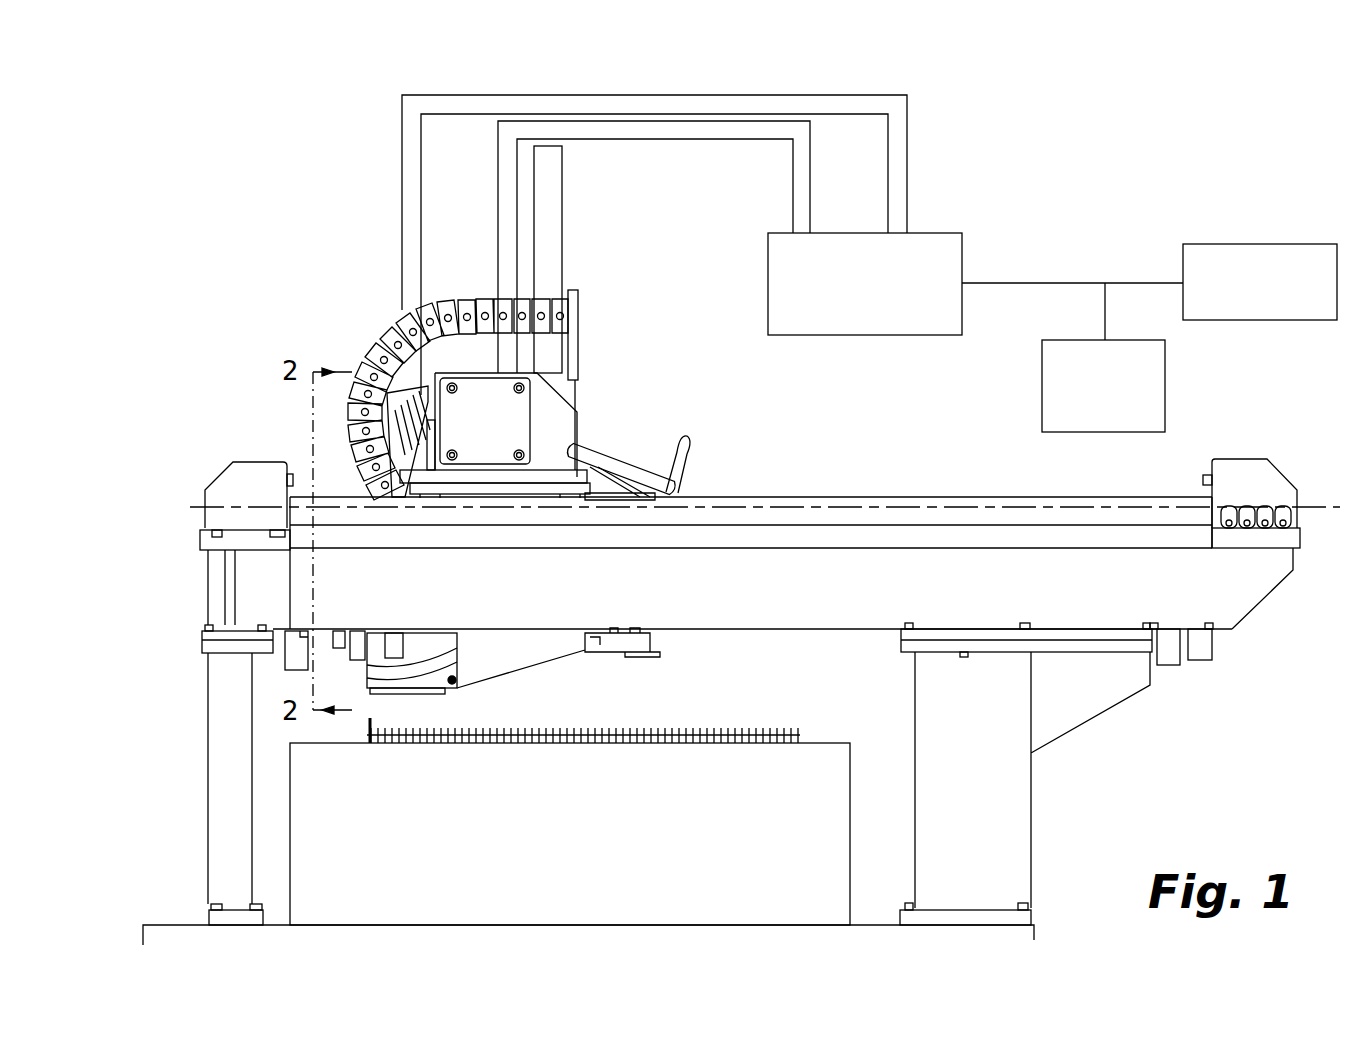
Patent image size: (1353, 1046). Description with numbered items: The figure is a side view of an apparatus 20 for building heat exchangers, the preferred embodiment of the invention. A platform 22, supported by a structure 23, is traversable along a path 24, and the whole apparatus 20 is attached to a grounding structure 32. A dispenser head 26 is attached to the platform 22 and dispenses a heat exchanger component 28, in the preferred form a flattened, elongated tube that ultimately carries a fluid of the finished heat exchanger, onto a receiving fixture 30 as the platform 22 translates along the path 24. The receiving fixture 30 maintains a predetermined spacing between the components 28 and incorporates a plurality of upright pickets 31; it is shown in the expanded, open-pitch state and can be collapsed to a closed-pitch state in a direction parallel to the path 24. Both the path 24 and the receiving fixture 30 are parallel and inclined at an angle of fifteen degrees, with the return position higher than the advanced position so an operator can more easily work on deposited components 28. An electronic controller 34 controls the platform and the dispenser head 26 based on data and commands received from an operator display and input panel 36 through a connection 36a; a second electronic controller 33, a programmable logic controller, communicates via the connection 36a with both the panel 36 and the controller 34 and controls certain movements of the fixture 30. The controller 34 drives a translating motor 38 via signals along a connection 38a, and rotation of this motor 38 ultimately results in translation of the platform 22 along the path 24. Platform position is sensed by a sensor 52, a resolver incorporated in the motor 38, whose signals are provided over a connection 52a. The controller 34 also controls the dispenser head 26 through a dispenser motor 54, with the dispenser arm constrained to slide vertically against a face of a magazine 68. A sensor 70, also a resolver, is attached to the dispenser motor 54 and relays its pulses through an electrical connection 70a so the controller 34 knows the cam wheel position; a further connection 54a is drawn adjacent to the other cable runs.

The apparatus 20 is at (1218, 153).
The platform 22 is at (543, 470).
The structure 23 is at (1180, 595).
The path 24 is at (1322, 505).
The dispenser head 26 is at (357, 668).
The heat exchanger component 28 is at (370, 740).
The receiving fixture 30 is at (503, 745).
The upright pickets 31 is at (487, 730).
The grounding structure 32 is at (478, 925).
The second electronic controller 33 is at (1260, 282).
The electronic controller 34 is at (865, 284).
The operator display and input panel 36 is at (1103, 386).
The connection 36a is at (1036, 283).
The translating motor 38 is at (471, 388).
The connection 38a is at (810, 148).
The sensor 52 is at (500, 395).
The connection 52a is at (793, 200).
The dispenser motor 54 is at (355, 432).
The carrier cable 54a is at (421, 228).
The magazine 68 is at (562, 190).
The sensor 70 is at (378, 367).
The electrical connection 70a is at (402, 240).